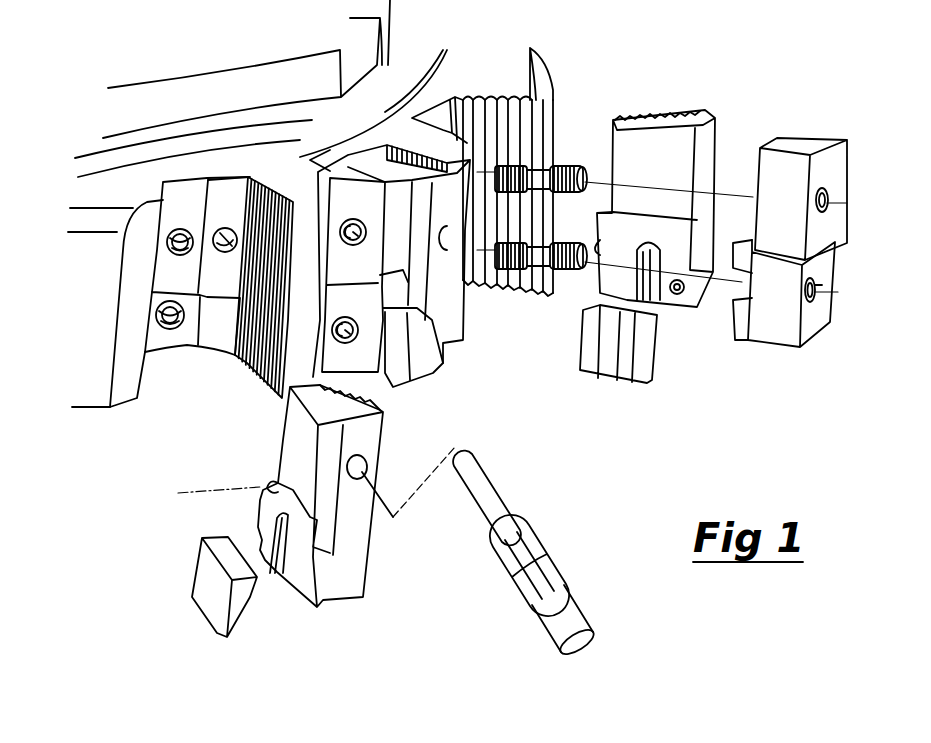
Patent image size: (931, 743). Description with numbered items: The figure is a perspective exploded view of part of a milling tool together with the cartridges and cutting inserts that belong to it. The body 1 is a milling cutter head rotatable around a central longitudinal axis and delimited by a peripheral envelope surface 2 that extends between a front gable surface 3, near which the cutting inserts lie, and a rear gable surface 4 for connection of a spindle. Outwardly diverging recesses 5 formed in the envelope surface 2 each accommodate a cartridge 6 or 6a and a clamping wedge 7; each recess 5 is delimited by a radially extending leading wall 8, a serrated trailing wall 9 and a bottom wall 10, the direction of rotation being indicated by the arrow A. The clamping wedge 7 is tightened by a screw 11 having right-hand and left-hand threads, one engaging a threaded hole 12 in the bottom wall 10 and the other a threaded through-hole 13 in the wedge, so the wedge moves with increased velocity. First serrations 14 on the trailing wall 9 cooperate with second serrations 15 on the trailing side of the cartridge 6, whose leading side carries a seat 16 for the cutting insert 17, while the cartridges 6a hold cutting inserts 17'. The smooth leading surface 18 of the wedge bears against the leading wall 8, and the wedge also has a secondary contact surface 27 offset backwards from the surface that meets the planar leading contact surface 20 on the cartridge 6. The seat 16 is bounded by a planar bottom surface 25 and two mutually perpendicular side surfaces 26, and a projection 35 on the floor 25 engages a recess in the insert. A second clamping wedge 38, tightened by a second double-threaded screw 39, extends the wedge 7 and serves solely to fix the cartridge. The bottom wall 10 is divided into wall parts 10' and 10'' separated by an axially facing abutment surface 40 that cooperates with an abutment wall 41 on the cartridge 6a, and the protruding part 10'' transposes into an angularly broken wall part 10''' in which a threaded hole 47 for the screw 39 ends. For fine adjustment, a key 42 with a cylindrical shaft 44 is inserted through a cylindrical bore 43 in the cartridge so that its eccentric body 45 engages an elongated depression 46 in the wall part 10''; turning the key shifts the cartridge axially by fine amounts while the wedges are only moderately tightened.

The body 1 is at (557, 82).
The envelope surface 2 is at (126, 303).
The front gable surface 3 is at (95, 410).
The rear gable surface 4 is at (108, 193).
The recess 5 is at (480, 315).
The cartridge 6 is at (368, 573).
The cartridge 6a is at (707, 110).
The clamping wedge 7 is at (788, 357).
The leading wall 8 is at (328, 160).
The trailing wall 9 is at (492, 97).
The bottom wall 10 is at (192, 363).
The bottom wall part 10' is at (220, 351).
The bottom wall part 10'' is at (230, 141).
The angularly broken wall part 10''' is at (201, 193).
The screw 11 is at (557, 275).
The threaded hole 12 is at (173, 329).
The threaded through-hole 13 is at (813, 296).
The first serrations 14 is at (267, 193).
The second serrations 15 is at (378, 405).
The seat 16 is at (323, 583).
The cutting insert 17 is at (215, 609).
The cutting insert 17' is at (639, 370).
The leading surface 18 is at (767, 325).
The leading contact surface 20 is at (260, 510).
The bottom surface 25 is at (667, 270).
The side surfaces 26 is at (282, 573).
The secondary contact surface 27 is at (822, 285).
The projection 35 is at (680, 292).
The second clamping wedge 38 is at (797, 147).
The second double-threaded screw 39 is at (553, 167).
The first axially facing abutment surface 40 is at (212, 303).
The second axially facing abutment wall 41 is at (273, 483).
The key 42 is at (557, 543).
The cylindrical bore 43 is at (365, 465).
The shaft 44 is at (480, 505).
The eccentric body 45 is at (466, 458).
The elongated depression 46 is at (225, 232).
The threaded hole 47 is at (181, 233).
The arrow A is at (335, 113).